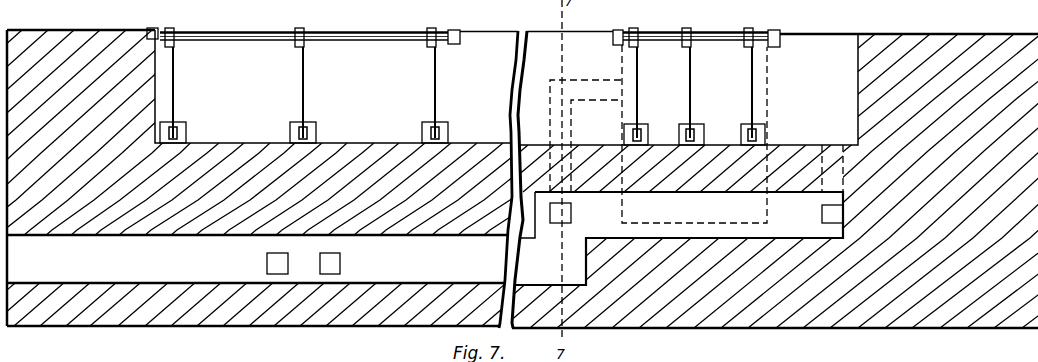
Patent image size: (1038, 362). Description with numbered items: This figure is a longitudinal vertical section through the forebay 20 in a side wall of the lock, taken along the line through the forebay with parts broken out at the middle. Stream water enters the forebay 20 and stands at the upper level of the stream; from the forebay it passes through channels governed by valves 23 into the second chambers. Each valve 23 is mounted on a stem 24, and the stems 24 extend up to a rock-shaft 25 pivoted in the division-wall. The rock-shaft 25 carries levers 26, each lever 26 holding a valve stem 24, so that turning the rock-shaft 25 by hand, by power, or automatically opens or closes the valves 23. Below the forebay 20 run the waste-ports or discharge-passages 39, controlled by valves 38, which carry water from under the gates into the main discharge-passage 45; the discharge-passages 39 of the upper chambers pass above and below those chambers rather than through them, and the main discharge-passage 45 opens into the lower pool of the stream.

The forebay 20 is at (506, 87).
The valve 23 is at (471, 133).
The valve stem 24 is at (472, 92).
The rock-shaft 25 is at (463, 33).
The lever 26 is at (462, 30).
The valve 38 is at (303, 263).
The discharge-passage 39 is at (575, 214).
The main discharge-passage 45 is at (425, 238).